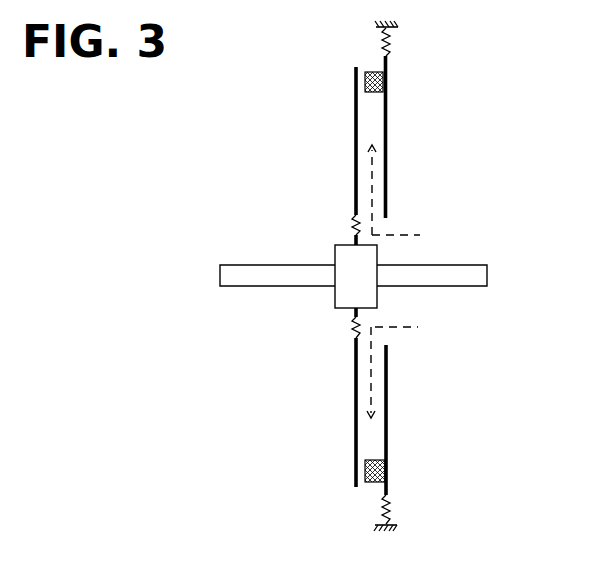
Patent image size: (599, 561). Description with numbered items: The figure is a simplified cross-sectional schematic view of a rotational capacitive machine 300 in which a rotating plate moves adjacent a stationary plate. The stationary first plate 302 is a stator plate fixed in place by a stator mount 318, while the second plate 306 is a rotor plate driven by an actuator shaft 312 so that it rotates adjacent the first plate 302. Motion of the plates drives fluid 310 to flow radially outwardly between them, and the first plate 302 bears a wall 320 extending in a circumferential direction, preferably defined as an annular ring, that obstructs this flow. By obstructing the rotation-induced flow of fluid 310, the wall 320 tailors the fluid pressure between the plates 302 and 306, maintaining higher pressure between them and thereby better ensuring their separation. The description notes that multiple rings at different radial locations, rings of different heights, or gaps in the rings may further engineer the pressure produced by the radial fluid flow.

The rotational capacitive machine 300 is at (264, 158).
The first plate 302 is at (388, 125).
The second plate 306 is at (356, 170).
The fluid 310 is at (369, 119).
The actuator shaft 312 is at (448, 265).
The stator mount 318 is at (394, 28).
The wall 320 is at (374, 71).